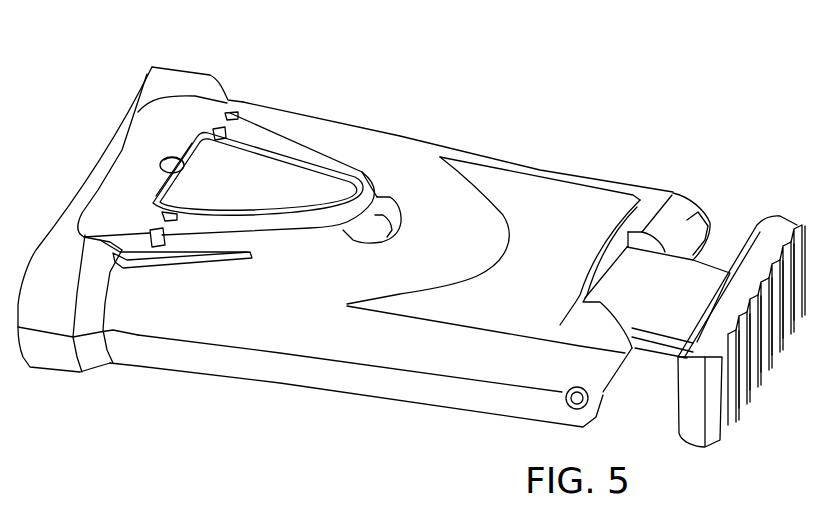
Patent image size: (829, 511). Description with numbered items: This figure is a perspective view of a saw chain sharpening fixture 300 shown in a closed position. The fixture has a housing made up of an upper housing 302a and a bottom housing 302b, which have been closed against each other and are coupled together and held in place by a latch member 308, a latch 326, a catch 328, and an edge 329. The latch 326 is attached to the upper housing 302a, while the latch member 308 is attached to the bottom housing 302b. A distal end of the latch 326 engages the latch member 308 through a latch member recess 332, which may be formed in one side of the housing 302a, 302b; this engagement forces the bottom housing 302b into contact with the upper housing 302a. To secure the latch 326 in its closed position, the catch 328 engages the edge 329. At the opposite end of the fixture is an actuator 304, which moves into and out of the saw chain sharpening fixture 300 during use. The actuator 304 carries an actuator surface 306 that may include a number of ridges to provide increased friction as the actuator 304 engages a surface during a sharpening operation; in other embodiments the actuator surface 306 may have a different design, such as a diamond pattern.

The saw chain sharpening fixture 300 is at (607, 123).
The upper housing 302a is at (483, 153).
The bottom housing 302b is at (398, 402).
The actuator 304 is at (713, 268).
The actuator surface 306 is at (760, 380).
The latch member 308 is at (172, 157).
The latch 326 is at (259, 182).
The catch 328 is at (362, 172).
The edge 329 is at (387, 205).
The latch member recess 332 is at (163, 160).